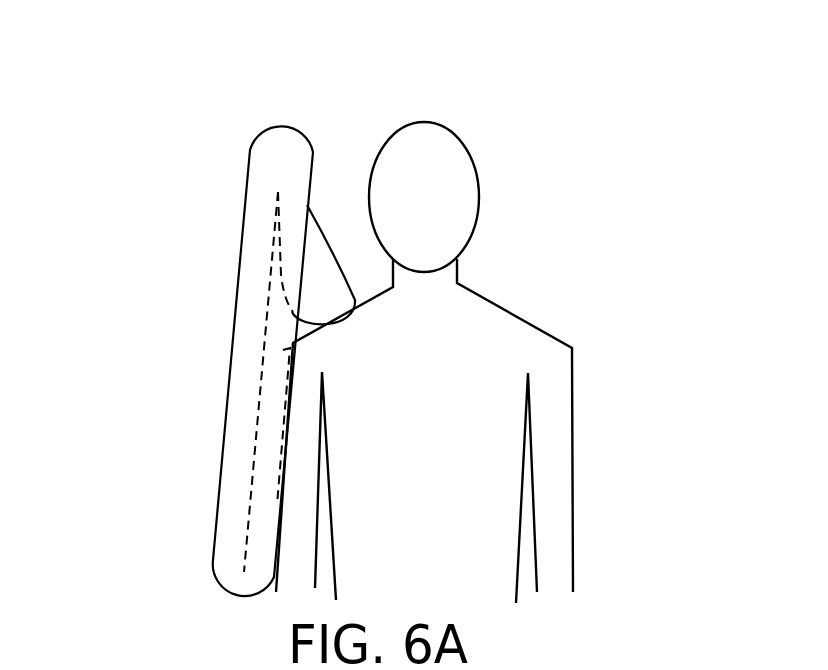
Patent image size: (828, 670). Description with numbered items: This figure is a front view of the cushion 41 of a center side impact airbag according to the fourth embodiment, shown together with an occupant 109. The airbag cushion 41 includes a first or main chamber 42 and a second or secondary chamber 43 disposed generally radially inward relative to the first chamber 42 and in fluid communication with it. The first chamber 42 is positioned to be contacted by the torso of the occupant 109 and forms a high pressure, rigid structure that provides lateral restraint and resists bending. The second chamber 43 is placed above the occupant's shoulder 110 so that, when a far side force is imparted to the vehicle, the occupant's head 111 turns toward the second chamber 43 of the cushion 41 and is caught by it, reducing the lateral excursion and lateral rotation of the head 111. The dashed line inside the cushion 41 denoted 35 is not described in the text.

The cushion 41 is at (180, 108).
The first chamber 42 is at (240, 232).
The second chamber 43 is at (323, 235).
The sensor element 35 is at (253, 452).
The occupant shoulder 110 is at (308, 358).
The occupant 109 is at (457, 463).
The occupant head 111 is at (478, 173).